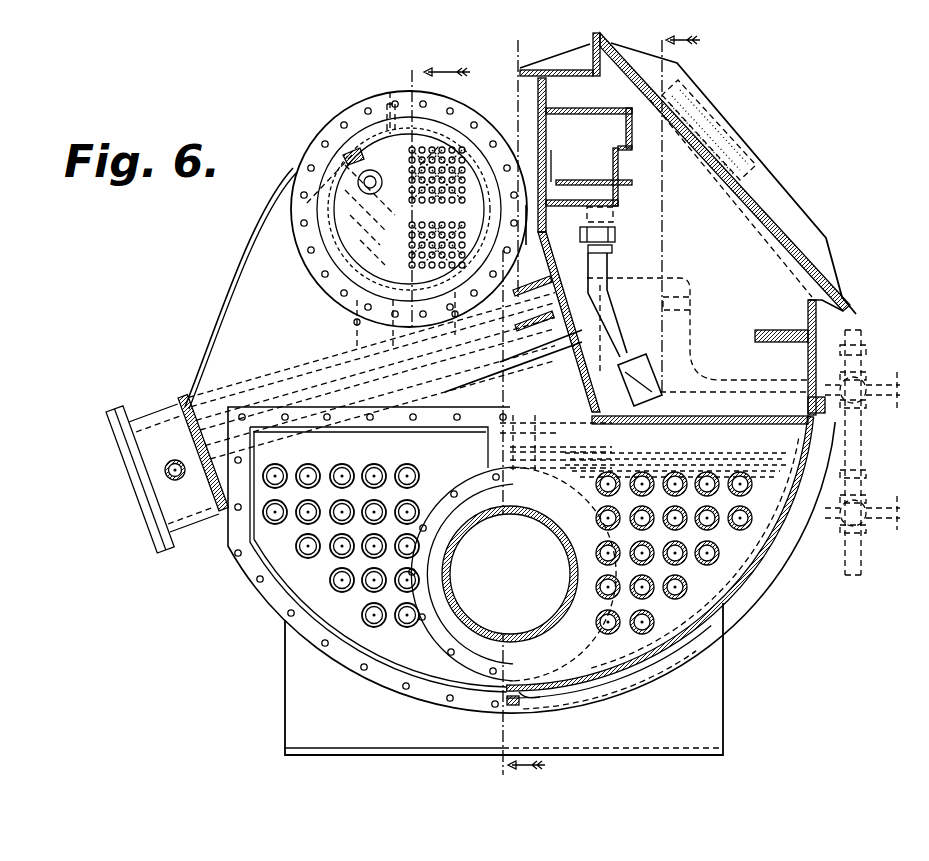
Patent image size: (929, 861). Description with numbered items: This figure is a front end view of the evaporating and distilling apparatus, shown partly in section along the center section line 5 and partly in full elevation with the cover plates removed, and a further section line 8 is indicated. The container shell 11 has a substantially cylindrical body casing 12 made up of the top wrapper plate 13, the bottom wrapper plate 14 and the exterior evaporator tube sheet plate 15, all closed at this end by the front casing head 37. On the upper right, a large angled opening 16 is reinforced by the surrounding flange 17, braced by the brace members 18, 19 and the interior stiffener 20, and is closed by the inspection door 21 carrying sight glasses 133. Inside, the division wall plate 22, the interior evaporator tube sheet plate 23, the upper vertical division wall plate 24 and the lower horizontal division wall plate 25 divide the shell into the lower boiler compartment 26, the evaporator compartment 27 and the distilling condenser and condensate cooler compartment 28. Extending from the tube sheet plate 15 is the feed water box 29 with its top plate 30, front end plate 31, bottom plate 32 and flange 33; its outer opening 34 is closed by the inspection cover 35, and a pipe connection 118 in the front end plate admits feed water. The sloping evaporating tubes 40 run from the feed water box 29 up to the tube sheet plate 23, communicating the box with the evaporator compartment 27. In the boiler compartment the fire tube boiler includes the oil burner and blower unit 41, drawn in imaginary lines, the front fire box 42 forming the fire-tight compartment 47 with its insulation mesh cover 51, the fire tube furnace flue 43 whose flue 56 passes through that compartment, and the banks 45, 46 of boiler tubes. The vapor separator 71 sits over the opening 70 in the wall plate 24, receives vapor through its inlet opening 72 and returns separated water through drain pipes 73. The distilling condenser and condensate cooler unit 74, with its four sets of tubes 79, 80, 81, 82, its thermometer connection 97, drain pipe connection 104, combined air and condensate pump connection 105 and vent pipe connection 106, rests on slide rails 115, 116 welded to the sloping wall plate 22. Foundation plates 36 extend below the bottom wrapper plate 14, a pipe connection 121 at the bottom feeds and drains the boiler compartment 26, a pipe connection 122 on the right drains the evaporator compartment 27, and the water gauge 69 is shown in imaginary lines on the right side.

The section line 5- 5 is at (595, 403).
The section line 8- 8 is at (436, 186).
The container shell 11 is at (414, 784).
The body casing 12 is at (288, 178).
The top wrapper plate 13 is at (238, 252).
The bottom wrapper plate 14 is at (762, 558).
The exterior evaporator tube sheet plate 15 is at (186, 398).
The opening 16 is at (618, 93).
The flange 17 is at (596, 36).
The brace member 18 is at (563, 58).
The brace member 19 is at (830, 325).
The interior stiffener 20 is at (772, 332).
The inspection door 21 is at (740, 233).
The division wall plate 22 is at (262, 382).
The interior evaporator tube sheet plate 23 is at (550, 247).
The upper vertical division wall plate 24 is at (546, 140).
The lower horizontal division wall plate 25 is at (702, 420).
The lower boiler compartment 26 is at (713, 583).
The evaporator compartment 27 is at (828, 228).
The distilling condenser and condensate cooler compartment 28 is at (250, 285).
The feed water box 29 is at (125, 408).
The top plate 30 is at (150, 417).
The front end plate 31 is at (142, 440).
The bottom plate 32 is at (142, 467).
The flange 33 is at (170, 552).
The outer opening 34 is at (150, 500).
The inspection cover 35 is at (163, 530).
The foundation plates 36 is at (704, 718).
The front casing head 37 is at (230, 323).
The evaporating tubes 40 is at (528, 400).
The oil burner and blower unit 41 is at (682, 300).
The front fire box 42 is at (272, 598).
The fire tube furnace flue 43 is at (468, 537).
The bank of boiler tubes 45 is at (407, 468).
The bank of boiler tubes 46 is at (705, 476).
The fire-tight compartment 47 is at (347, 618).
The insulation mesh cover 51 is at (432, 622).
The flue 56 is at (510, 574).
The water gauge 69 is at (862, 467).
The opening 70 is at (552, 165).
The vapor separator 71 is at (590, 100).
The inlet opening 72 is at (624, 135).
The drain pipes 73 is at (621, 306).
The distilling condenser and condensate cooler unit 74 is at (420, 152).
The set of tubes 79 is at (318, 282).
The set of tubes 80 is at (463, 170).
The set of tubes 81 is at (418, 160).
The set of tubes 82 is at (388, 112).
The thermometer connection 97 is at (350, 162).
The drain pipe connection 104 is at (364, 338).
The combined air and condensate pump connection 105 is at (300, 255).
The vent pipe connection 106 is at (390, 92).
The slide rail 115 is at (358, 322).
The slide rail 116 is at (533, 298).
The pipe connection 118 is at (177, 481).
The pipe connection 121 is at (512, 702).
The pipe connection 122 is at (808, 408).
The sight glasses 133 is at (740, 132).